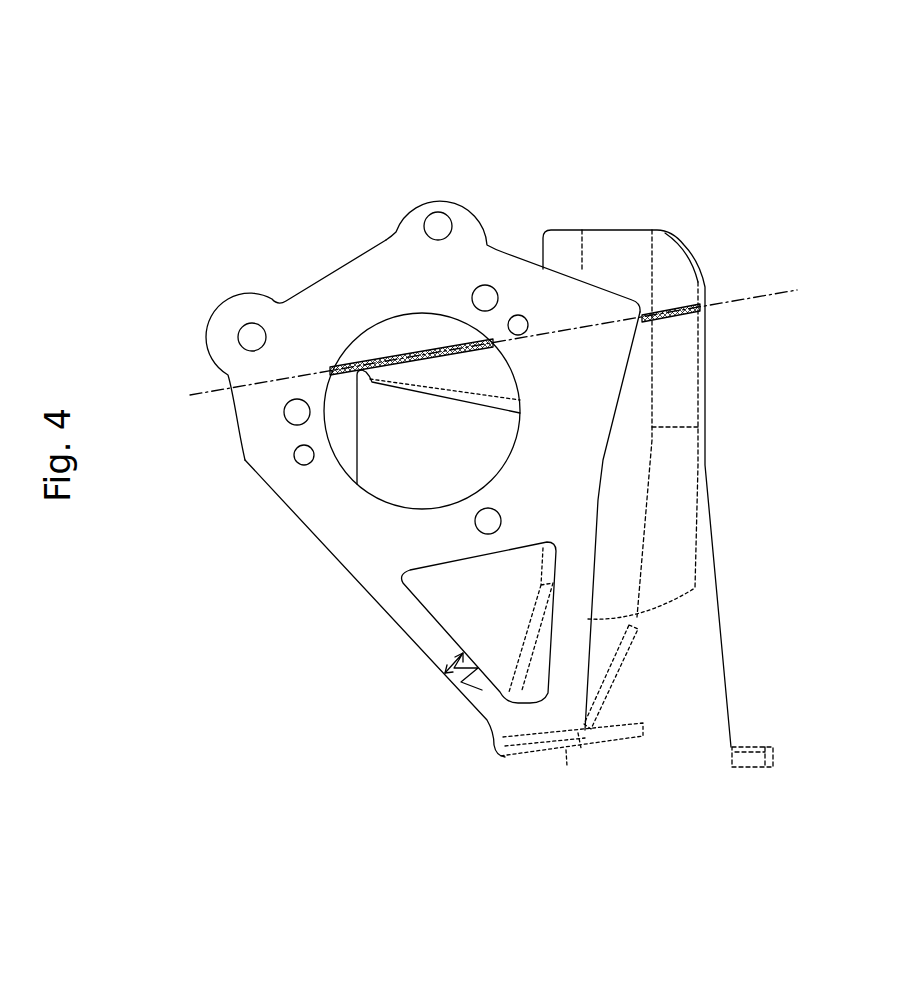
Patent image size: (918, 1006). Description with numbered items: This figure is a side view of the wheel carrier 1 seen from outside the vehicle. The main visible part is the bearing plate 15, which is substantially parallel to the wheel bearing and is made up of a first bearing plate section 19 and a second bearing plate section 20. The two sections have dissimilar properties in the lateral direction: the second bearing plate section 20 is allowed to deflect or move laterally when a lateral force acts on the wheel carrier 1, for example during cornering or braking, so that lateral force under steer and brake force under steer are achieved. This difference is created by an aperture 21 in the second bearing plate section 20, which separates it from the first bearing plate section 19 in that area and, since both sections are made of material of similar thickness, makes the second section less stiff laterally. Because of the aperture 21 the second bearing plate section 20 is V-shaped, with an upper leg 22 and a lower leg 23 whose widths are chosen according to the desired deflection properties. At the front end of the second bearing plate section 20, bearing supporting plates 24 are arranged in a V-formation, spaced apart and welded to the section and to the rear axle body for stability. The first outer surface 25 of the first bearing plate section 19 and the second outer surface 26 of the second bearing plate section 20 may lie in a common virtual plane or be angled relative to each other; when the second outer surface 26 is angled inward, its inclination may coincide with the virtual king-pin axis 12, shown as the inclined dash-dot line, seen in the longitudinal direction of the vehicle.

The wheel carrier 1 is at (202, 218).
The virtual king-pin axis 12 is at (780, 293).
The bearing plate 15 is at (565, 438).
The first bearing plate section 19 is at (345, 295).
The second bearing plate section 20 is at (422, 627).
The aperture 21 is at (470, 615).
The upper leg 22 is at (482, 692).
The lower leg 23 is at (565, 658).
The bearing supporting plate 24 is at (597, 743).
The first outer surface 25 is at (513, 282).
The second outer surface 26 is at (568, 622).